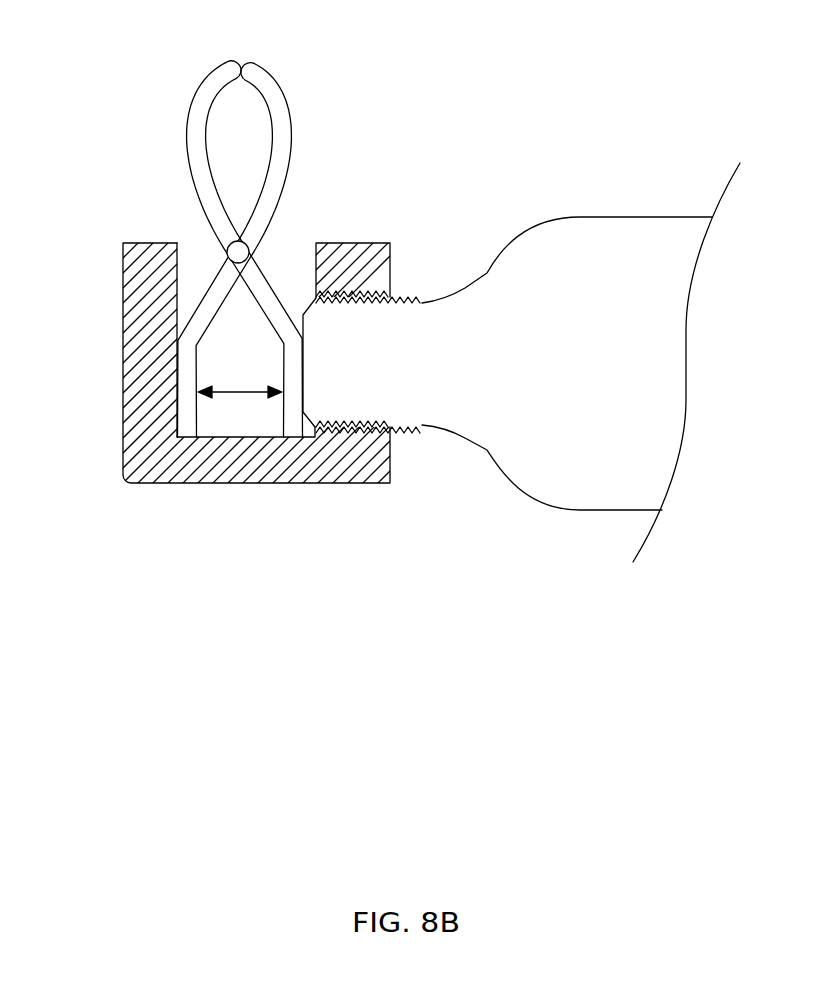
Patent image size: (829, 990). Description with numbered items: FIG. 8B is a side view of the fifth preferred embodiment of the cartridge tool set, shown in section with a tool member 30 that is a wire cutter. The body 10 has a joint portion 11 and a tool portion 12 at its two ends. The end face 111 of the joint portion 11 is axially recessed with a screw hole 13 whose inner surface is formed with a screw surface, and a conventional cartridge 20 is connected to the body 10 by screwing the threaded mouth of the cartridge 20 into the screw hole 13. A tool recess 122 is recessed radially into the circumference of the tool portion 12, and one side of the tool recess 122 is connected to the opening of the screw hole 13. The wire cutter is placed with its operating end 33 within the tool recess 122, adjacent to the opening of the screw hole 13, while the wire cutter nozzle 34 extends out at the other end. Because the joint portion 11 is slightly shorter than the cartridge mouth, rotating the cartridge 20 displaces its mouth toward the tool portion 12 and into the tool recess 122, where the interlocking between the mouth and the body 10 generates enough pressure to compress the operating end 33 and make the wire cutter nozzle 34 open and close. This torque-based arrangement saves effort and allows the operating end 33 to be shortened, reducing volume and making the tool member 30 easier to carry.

The body 10 is at (323, 300).
The joint portion 11 is at (363, 505).
The tool portion 12 is at (414, 313).
The screw hole 13 is at (315, 423).
The cartridge 20 is at (657, 217).
The tool member 30 is at (194, 227).
The operating end 33 is at (188, 408).
The wire cutter nozzle 34 is at (215, 90).
The end face 111 is at (390, 268).
The tool recess 122 is at (177, 270).